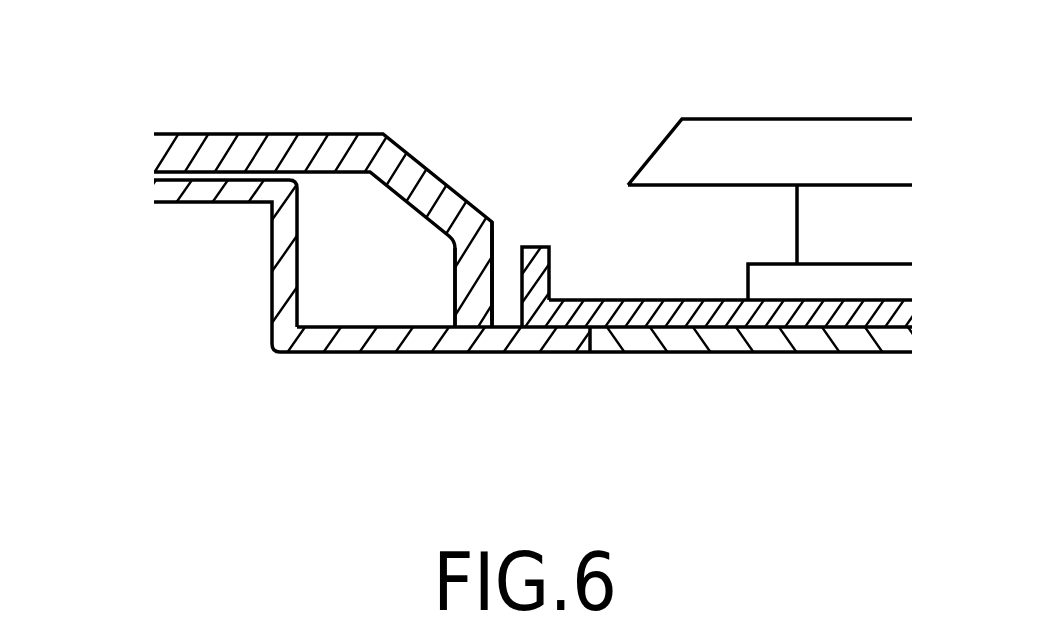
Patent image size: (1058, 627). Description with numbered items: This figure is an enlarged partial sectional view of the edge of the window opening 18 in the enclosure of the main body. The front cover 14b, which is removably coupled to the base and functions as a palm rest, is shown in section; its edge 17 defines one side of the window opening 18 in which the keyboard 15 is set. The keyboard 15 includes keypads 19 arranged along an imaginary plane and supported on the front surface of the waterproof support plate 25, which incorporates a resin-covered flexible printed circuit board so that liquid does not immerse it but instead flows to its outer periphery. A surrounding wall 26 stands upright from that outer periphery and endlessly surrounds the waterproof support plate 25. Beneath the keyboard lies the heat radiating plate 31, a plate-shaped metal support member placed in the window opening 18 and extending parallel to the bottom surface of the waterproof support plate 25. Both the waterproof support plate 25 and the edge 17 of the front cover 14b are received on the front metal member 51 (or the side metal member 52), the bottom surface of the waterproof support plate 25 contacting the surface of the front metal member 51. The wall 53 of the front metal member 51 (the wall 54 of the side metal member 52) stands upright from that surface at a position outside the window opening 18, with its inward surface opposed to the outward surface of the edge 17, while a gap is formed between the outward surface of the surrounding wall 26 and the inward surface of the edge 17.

The front cover 14b is at (327, 133).
The keyboard 15 is at (859, 93).
The edge 17 is at (496, 240).
The window opening 18 is at (496, 238).
The keypad 19 is at (715, 119).
The waterproof support plate 25 is at (677, 302).
The surrounding wall 26 is at (549, 265).
The heat radiating plate 31 is at (663, 352).
The front metal member 51 is at (529, 212).
The side metal member 52 is at (348, 352).
The wall 53 is at (208, 266).
The wall 54 is at (297, 272).